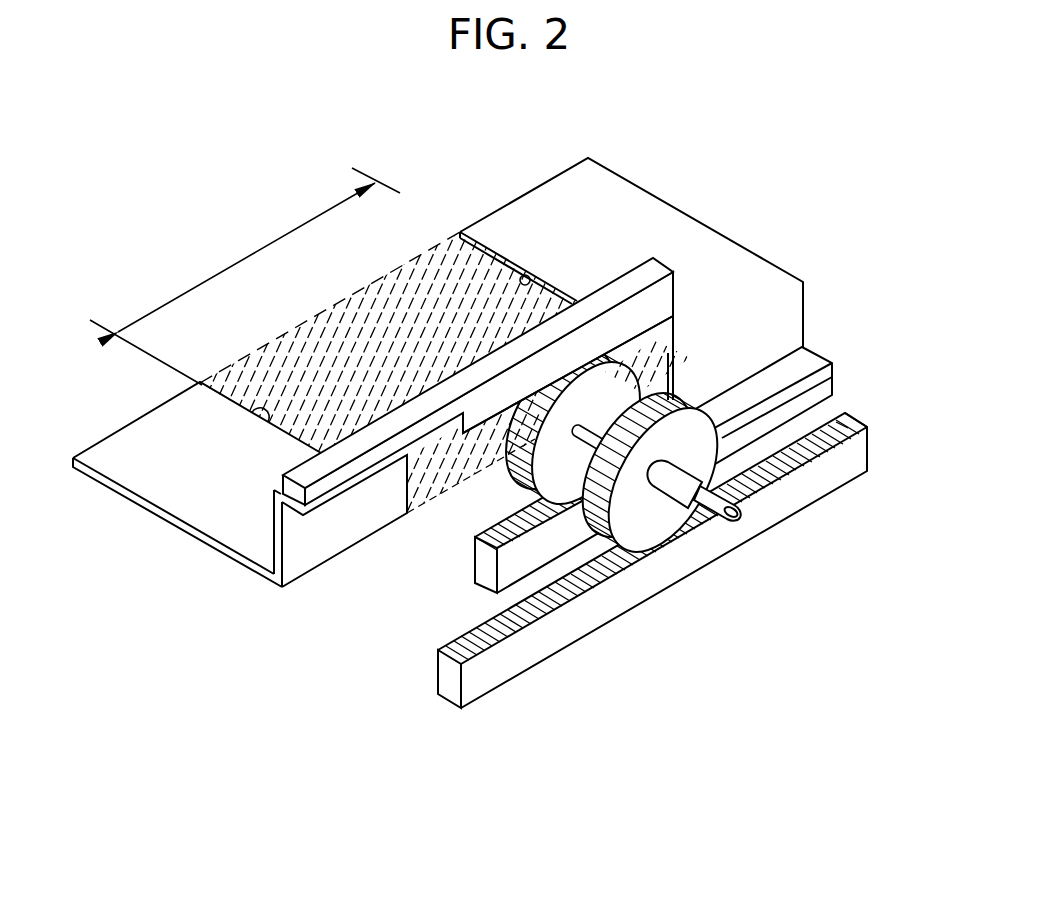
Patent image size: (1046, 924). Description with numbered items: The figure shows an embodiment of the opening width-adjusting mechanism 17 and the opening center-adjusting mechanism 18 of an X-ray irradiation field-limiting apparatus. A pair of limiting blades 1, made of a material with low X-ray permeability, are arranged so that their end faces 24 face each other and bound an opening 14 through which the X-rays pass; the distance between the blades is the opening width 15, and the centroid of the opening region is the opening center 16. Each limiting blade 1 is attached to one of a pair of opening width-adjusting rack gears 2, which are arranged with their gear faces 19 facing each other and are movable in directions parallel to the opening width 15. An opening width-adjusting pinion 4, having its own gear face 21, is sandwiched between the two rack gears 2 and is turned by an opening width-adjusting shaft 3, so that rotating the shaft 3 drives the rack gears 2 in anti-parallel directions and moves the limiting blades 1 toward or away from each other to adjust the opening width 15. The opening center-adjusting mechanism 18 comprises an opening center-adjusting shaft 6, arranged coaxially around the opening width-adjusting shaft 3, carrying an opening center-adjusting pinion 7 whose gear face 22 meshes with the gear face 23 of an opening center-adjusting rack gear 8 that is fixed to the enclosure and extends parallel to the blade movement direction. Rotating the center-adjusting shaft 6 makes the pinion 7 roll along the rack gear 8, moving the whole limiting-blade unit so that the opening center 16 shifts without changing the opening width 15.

The limiting blade 1 is at (623, 190).
The opening width-adjusting rack gear 2 is at (657, 270).
The opening width-adjusting shaft 3 is at (843, 415).
The opening width-adjusting pinion 4 is at (673, 353).
The opening center-adjusting shaft 6 is at (682, 492).
The opening center-adjusting pinion 7 is at (648, 525).
The opening center-adjusting rack gear 8 is at (580, 620).
The opening 14 is at (322, 328).
The opening width 15 is at (245, 276).
The opening center 16 is at (424, 360).
The opening width-adjusting mechanism 17 is at (728, 173).
The opening center-adjusting mechanism 18 is at (632, 728).
The gear face 19 is at (488, 527).
The gear face 21 is at (518, 430).
The gear face 22 is at (493, 587).
The gear face 23 is at (852, 415).
The end face 24 is at (524, 275).